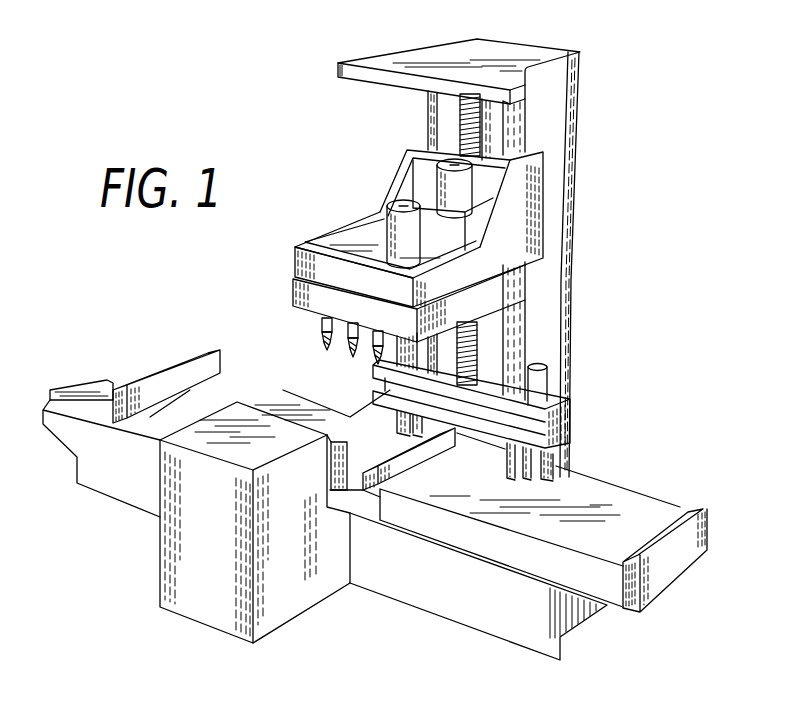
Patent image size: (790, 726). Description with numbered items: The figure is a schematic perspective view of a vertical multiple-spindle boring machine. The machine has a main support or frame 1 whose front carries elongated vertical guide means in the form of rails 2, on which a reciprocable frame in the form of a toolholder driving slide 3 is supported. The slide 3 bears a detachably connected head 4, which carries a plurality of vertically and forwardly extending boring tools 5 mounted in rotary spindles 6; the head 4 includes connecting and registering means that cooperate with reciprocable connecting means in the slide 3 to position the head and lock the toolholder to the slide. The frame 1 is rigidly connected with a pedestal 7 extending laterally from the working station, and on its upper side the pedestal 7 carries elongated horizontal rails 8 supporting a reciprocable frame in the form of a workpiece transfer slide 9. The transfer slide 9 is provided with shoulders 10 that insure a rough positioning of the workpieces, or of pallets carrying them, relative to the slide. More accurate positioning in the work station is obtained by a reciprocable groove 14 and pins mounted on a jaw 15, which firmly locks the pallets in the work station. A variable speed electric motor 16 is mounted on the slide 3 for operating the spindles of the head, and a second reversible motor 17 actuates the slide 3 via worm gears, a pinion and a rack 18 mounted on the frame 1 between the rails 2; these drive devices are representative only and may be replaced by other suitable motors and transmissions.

The main support or frame 1 is at (551, 283).
The rails 2 is at (516, 334).
The toolholder driving slide 3 is at (537, 212).
The head 4 is at (292, 292).
The boring tools 5 is at (325, 343).
The rotary spindles 6 is at (320, 322).
The pedestal 7 is at (405, 598).
The rails 8 is at (67, 390).
The workpiece transfer slide 9 is at (620, 520).
The shoulders 10 is at (198, 357).
The reciprocable groove 14 is at (563, 444).
The jaw 15 is at (347, 466).
The variable speed electric motor 16 is at (393, 204).
The reversible motor 17 is at (413, 156).
The rack 18 is at (468, 111).